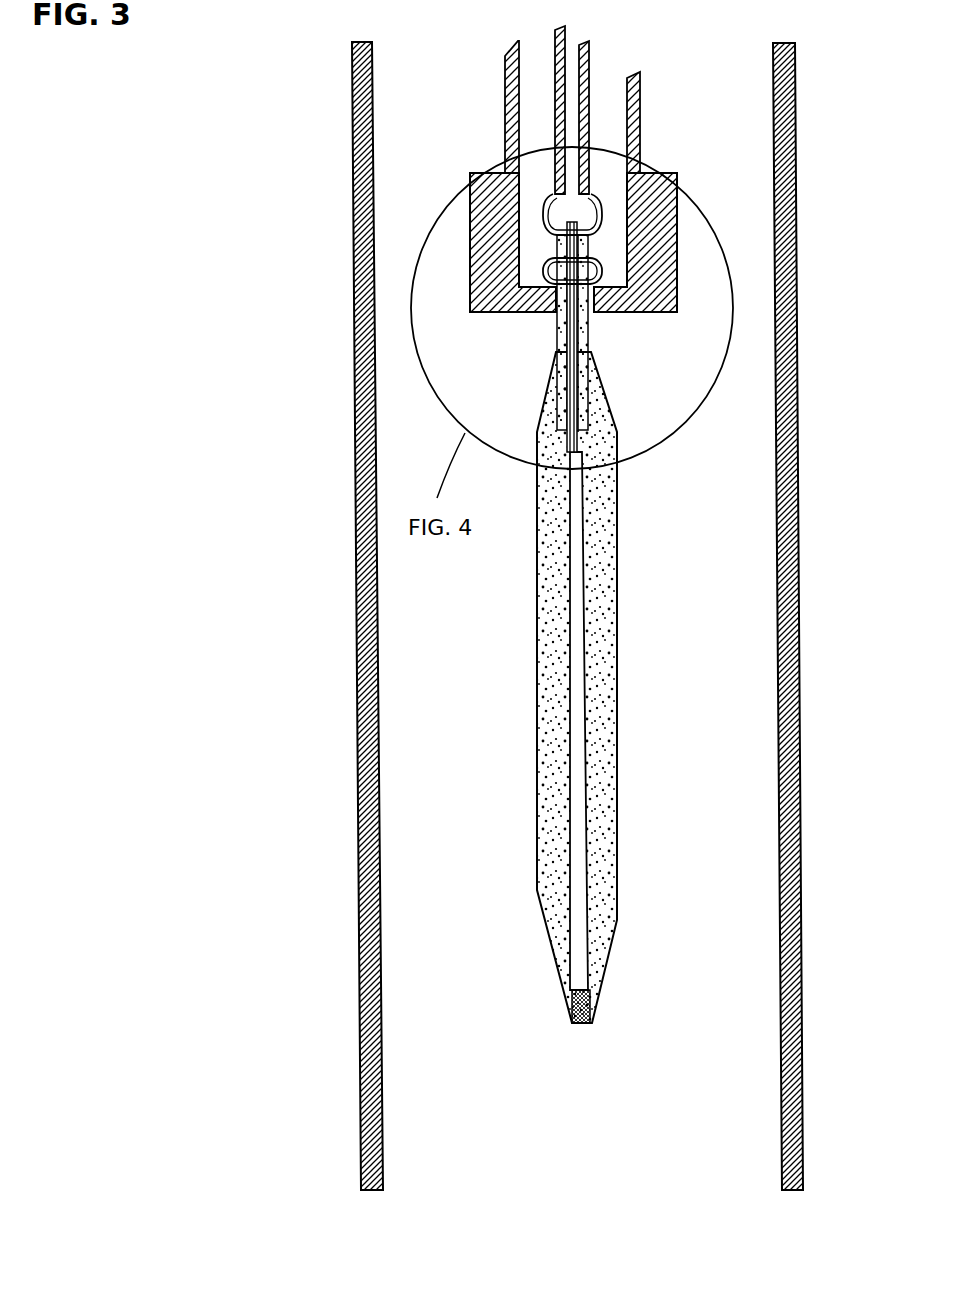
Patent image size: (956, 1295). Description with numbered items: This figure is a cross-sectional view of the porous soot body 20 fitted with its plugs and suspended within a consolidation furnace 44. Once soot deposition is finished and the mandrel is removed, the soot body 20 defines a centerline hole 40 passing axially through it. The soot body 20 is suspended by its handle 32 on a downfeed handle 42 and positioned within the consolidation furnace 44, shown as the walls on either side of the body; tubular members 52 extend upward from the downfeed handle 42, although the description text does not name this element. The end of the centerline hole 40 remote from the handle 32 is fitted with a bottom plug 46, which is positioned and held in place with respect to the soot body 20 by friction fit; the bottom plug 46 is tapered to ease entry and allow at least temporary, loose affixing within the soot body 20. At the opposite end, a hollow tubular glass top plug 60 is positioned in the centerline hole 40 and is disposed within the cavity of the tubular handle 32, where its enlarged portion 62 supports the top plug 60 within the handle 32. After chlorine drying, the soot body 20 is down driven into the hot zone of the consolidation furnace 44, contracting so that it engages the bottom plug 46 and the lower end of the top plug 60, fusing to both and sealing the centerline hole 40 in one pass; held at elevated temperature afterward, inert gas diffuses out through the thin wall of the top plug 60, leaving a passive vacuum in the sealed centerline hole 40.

The soot body 20 is at (598, 535).
The handle 32 is at (589, 323).
The centerline hole 40 is at (573, 624).
The downfeed handle 42 is at (679, 213).
The consolidation furnace 44 is at (797, 318).
The bottom plug 46 is at (578, 1025).
The conduit tubes 52 is at (586, 122).
The top plug 60 is at (599, 263).
The enlarged portion 62 is at (592, 423).